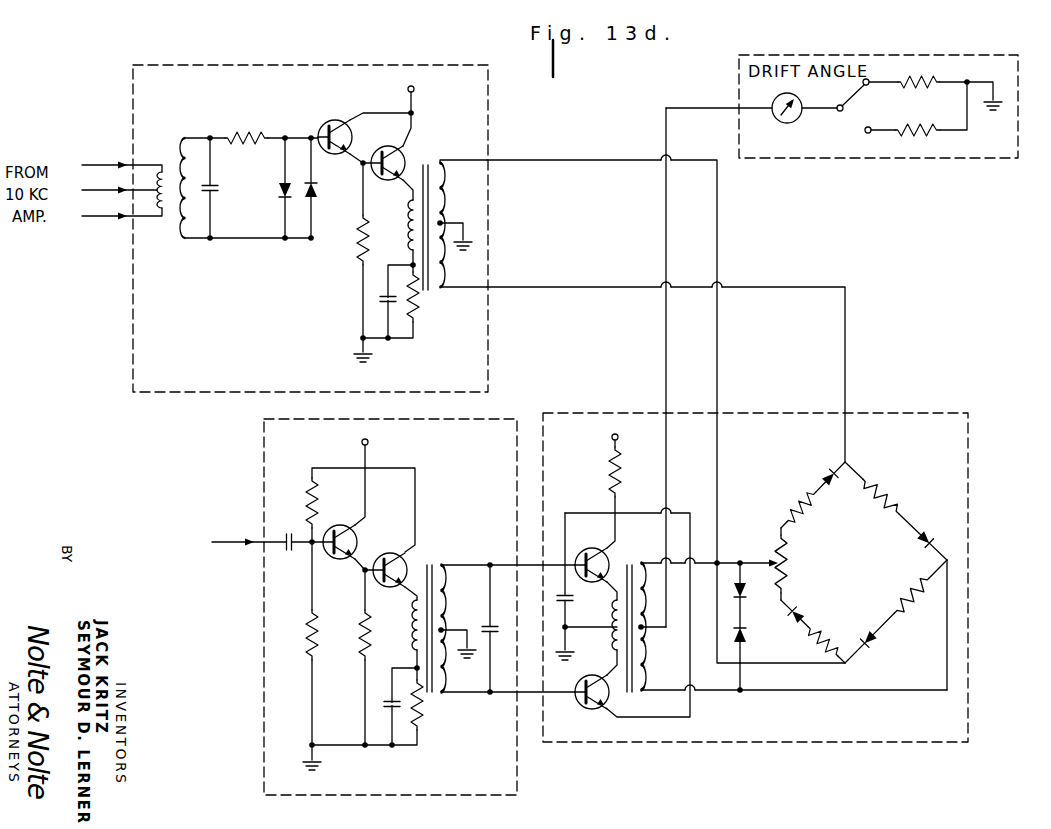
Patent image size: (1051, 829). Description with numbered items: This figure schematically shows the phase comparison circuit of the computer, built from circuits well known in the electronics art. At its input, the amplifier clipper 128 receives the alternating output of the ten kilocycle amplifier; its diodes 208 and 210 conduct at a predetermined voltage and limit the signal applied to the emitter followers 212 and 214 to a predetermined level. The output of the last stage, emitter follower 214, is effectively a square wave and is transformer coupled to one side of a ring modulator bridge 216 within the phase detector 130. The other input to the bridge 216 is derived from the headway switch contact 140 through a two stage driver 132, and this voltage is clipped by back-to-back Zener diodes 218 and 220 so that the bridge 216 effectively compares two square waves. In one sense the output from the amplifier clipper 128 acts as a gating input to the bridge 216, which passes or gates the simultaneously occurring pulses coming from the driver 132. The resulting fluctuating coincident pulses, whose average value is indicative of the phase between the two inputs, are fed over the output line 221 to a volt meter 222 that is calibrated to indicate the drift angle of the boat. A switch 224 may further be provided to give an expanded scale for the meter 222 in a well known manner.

The amplifier clipper 128 is at (285, 214).
The phase detector 130 is at (997, 428).
The driver 132 is at (390, 607).
The headway switch contact 140 is at (226, 572).
The diode 208 is at (280, 189).
The diode 210 is at (318, 190).
The emitter follower 212 is at (349, 92).
The emitter follower 214 is at (414, 152).
The ring modulator bridge 216 is at (866, 573).
The Zener diode 218 is at (748, 590).
The Zener diode 220 is at (757, 636).
The output line 221 is at (664, 352).
The volt meter 222 is at (787, 123).
The switch 224 is at (858, 91).